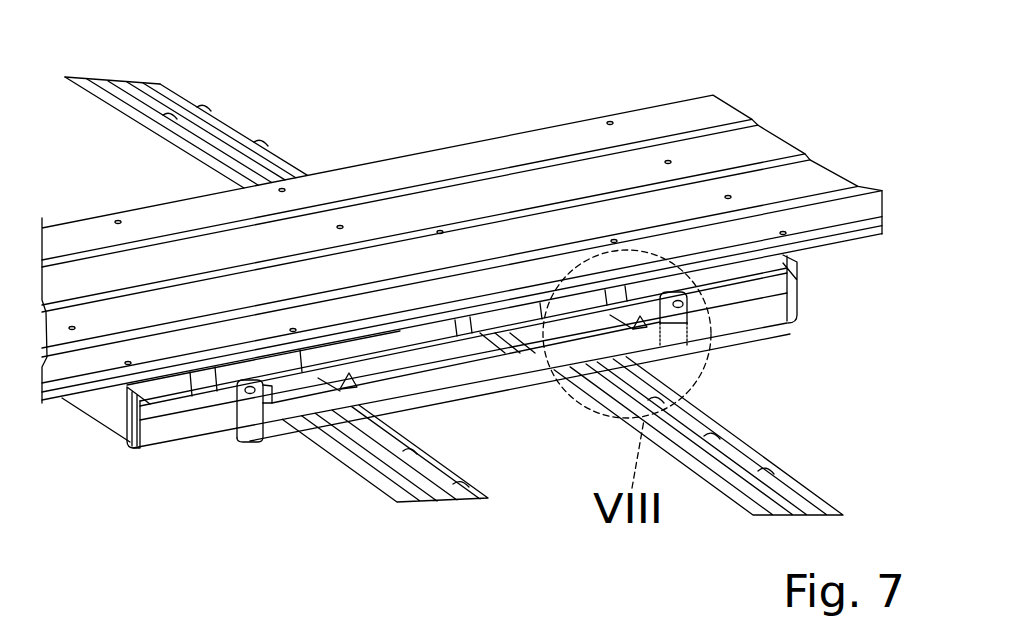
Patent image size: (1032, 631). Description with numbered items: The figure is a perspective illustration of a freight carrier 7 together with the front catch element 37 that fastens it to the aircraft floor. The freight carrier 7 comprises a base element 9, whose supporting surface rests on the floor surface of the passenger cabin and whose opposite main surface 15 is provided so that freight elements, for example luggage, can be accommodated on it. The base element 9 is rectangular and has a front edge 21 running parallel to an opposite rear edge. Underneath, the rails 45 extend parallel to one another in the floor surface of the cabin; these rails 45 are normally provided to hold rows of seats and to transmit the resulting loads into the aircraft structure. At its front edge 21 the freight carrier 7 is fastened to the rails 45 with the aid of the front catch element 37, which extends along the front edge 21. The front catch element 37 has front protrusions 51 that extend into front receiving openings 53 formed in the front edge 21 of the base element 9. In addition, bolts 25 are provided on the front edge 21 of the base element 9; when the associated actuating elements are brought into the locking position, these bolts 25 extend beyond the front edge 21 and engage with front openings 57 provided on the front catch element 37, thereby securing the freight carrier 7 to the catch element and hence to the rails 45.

The freight carrier 7 is at (630, 102).
The base element 9 is at (521, 208).
The main surface 15 is at (462, 293).
The front edge 21 is at (167, 430).
The bolts 25 is at (247, 393).
The front openings 57 is at (688, 307).
The front catch element 37 is at (272, 414).
The front receiving openings 53 is at (307, 384).
The front protrusions 51 is at (343, 394).
The rails 45 is at (763, 488).